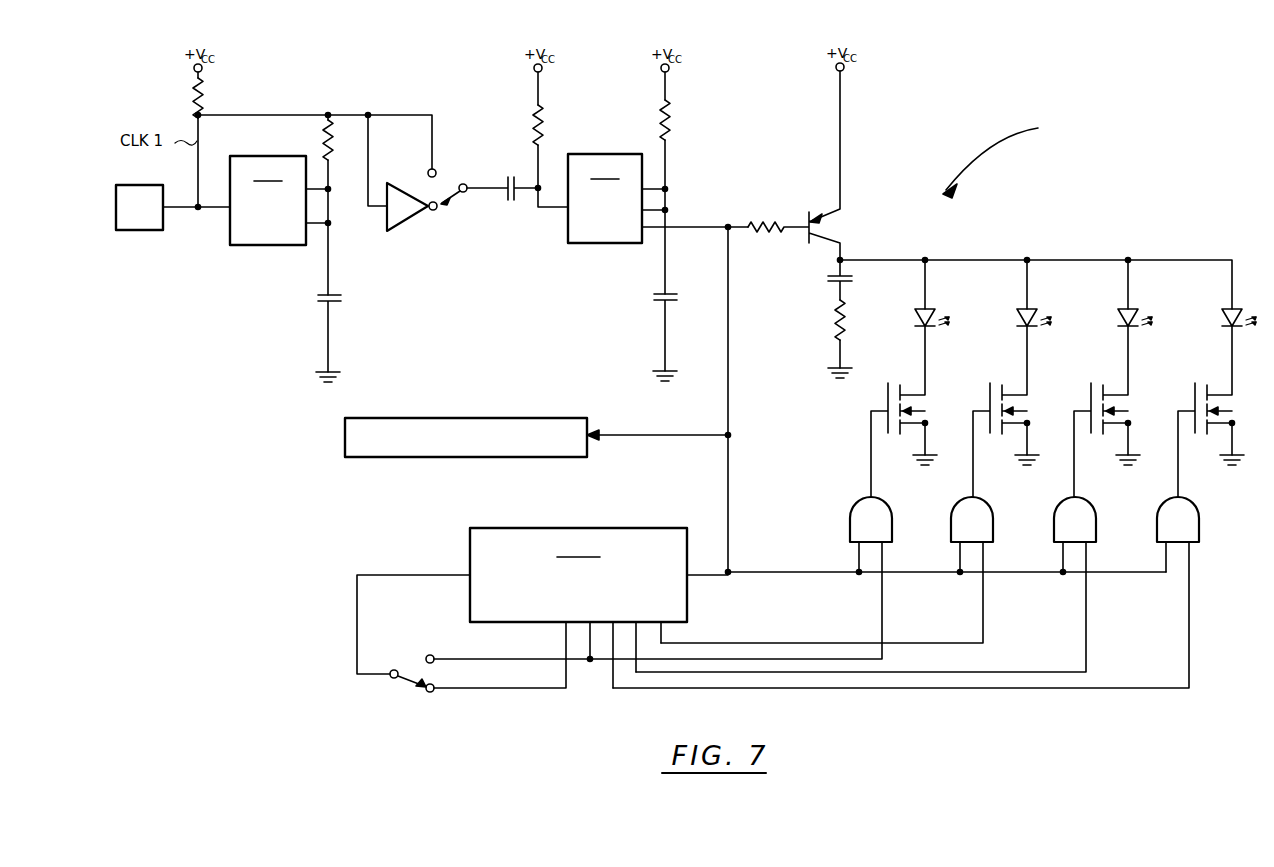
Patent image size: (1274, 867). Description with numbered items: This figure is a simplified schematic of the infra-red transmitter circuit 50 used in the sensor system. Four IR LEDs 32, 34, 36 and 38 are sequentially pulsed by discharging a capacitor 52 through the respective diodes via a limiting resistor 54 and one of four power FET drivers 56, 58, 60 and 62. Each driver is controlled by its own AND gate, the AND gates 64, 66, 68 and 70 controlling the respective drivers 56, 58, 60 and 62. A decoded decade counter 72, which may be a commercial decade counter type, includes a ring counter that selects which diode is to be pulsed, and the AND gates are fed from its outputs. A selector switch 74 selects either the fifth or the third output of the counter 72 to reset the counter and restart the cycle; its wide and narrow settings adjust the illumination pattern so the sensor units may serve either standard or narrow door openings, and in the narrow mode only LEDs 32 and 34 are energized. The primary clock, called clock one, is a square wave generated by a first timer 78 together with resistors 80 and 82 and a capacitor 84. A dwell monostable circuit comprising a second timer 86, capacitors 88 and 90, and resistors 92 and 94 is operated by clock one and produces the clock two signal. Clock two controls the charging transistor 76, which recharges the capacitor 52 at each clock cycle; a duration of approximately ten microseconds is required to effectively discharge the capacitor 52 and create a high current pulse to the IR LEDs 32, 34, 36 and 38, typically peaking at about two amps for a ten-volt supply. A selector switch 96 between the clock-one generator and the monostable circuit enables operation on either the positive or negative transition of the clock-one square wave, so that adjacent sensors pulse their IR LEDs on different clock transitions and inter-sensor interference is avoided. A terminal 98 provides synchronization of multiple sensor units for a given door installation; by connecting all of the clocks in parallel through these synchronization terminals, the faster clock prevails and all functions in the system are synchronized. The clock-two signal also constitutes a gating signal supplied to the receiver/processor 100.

The IR LED 32 is at (915, 305).
The IR LED 34 is at (1018, 305).
The IR LED 36 is at (1118, 305).
The IR LED 38 is at (1224, 305).
The IR transmitter circuit 50 is at (1005, 158).
The capacitor 52 is at (832, 277).
The limiting resistor 54 is at (836, 324).
The power FET driver 56 is at (885, 393).
The power FET driver 58 is at (988, 395).
The power FET driver 60 is at (1091, 395).
The power FET driver 62 is at (1194, 395).
The AND gate 64 is at (854, 497).
The AND gate 66 is at (957, 497).
The AND gate 68 is at (1060, 497).
The AND gate 70 is at (1162, 497).
The decoded decade counter 72 is at (540, 528).
The selector switch 74 is at (400, 680).
The charging transistor 76 is at (806, 224).
The 555-type timer 78 is at (251, 246).
The resistor 80 is at (325, 136).
The resistor 82 is at (194, 87).
The capacitor 84 is at (335, 295).
The 555-type timer 86 is at (595, 244).
The capacitor 88 is at (506, 183).
The capacitor 90 is at (658, 301).
The resistor 92 is at (543, 120).
The resistor 94 is at (670, 125).
The selector switch 96 is at (464, 193).
The terminal 98 is at (131, 232).
The receiver/processor 100 is at (460, 458).